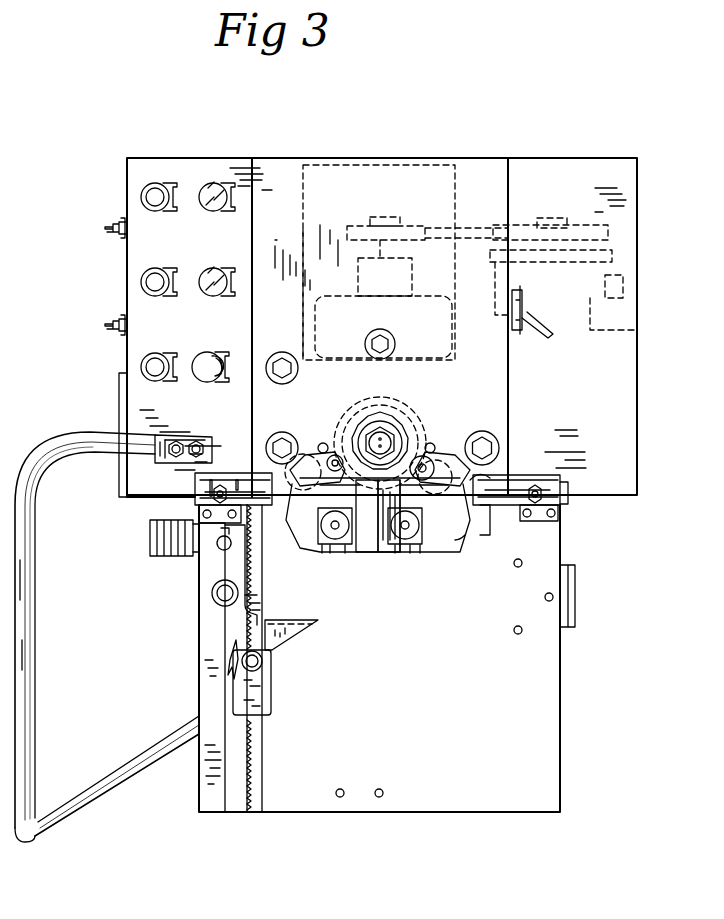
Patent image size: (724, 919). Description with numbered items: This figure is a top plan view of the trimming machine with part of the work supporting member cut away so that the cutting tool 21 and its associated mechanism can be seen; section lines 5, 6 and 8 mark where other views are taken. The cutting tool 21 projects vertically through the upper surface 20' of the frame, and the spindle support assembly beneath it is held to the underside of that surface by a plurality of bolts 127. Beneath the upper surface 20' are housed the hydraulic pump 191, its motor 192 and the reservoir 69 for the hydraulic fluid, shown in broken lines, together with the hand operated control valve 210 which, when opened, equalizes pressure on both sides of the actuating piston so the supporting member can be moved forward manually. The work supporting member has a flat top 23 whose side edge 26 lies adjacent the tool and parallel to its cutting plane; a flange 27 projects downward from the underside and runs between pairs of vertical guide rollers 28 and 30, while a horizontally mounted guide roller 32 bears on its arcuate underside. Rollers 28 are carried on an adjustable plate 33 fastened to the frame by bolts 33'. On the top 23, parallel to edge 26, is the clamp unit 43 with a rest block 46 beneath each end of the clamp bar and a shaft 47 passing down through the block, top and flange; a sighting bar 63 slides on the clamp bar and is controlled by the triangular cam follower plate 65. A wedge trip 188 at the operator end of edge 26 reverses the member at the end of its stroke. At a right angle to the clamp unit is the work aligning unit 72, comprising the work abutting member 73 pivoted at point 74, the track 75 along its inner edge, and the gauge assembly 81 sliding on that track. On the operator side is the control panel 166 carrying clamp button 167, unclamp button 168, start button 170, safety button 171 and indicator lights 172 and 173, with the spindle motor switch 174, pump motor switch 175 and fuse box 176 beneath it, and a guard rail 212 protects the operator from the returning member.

The button 170 is at (155, 183).
The indicator light 173 is at (213, 183).
The button 168 is at (150, 282).
The indicator light 172 is at (210, 268).
The control button 167 is at (150, 365).
The button 171 is at (203, 352).
The hydraulic pump motor switch 175 is at (106, 229).
The spindle motor switch 174 is at (106, 325).
The fuse box 176 is at (119, 396).
The control panel 166 is at (130, 182).
The reservoir 69 is at (335, 165).
The upper surface 20' is at (512, 140).
The motor 192 is at (315, 310).
The hydraulic pump 191 is at (637, 330).
The hand operated control valve 210 is at (528, 296).
The bolts 127 is at (282, 352).
The cutting tool 21 is at (396, 414).
The guide rollers 30 is at (330, 450).
The side edge 26 is at (462, 460).
The flange 27 is at (450, 495).
The guide rollers 28 is at (324, 542).
The adjustable plate 33 is at (356, 529).
The guide roller 32 is at (388, 552).
The bolts 33' is at (426, 540).
The wedge trip 188 is at (200, 473).
The shaft 47 is at (543, 494).
The sighting bar 63 is at (550, 475).
The cam follower plate 65 is at (571, 473).
The clamp unit 43 is at (510, 515).
The rest block 46 is at (545, 522).
The top 23 is at (560, 677).
The work abutting member 73 is at (232, 641).
The point 74 is at (215, 598).
The track 75 is at (259, 575).
The work aligning unit 72 is at (290, 658).
The gauge assembly 81 is at (271, 689).
The guard rail 212 is at (36, 712).
The section line 5 is at (235, 487).
The section line 6 is at (405, 368).
The section line 8 is at (138, 538).